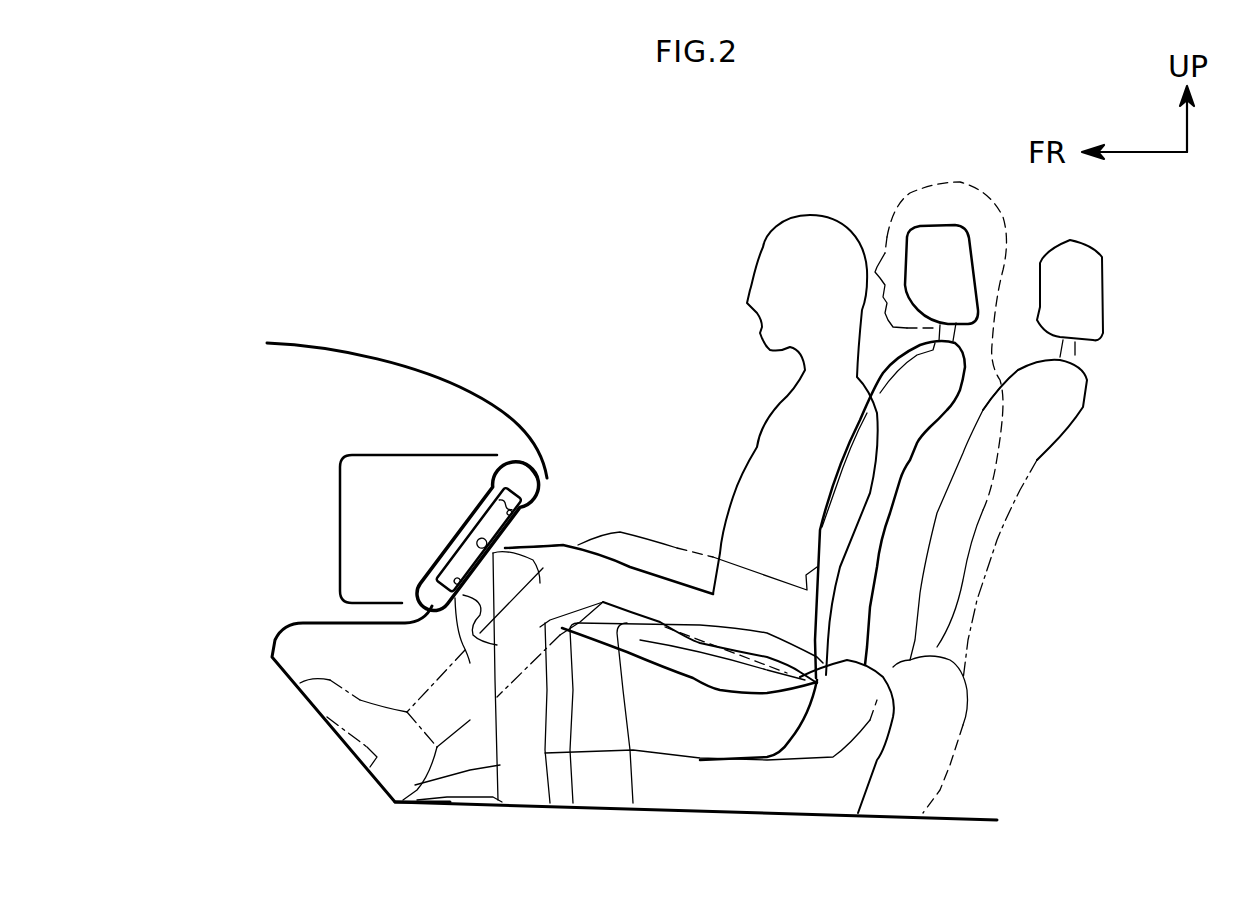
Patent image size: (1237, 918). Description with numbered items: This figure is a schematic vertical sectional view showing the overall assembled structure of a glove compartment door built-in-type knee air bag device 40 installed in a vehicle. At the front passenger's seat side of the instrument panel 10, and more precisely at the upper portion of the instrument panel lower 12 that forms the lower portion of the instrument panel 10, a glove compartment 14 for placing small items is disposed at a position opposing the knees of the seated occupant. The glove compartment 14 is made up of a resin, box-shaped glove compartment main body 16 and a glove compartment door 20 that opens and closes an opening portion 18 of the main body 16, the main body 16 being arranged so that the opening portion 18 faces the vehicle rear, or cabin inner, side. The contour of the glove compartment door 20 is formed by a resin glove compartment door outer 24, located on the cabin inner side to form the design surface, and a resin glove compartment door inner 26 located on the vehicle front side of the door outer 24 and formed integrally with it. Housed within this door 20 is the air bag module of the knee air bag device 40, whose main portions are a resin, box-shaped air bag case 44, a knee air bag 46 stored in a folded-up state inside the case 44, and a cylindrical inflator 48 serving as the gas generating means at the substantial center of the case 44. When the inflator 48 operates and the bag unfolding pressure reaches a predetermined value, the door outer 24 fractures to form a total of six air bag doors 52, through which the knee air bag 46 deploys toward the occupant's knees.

The instrument panel 10 is at (395, 357).
The instrument panel lower 12 is at (350, 627).
The glove compartment 14 is at (522, 530).
The glove compartment main body 16 is at (340, 535).
The opening portion 18 is at (427, 497).
The glove compartment door 20 is at (547, 514).
The glove compartment door outer 24 is at (536, 498).
The glove compartment door inner 26 is at (493, 510).
The glove compartment door built-in-type knee air bag device 40 is at (488, 642).
The air bag case 44 is at (433, 578).
The knee air bag 46 is at (475, 640).
The inflator 48 is at (540, 582).
The air bag doors 52 is at (512, 548).